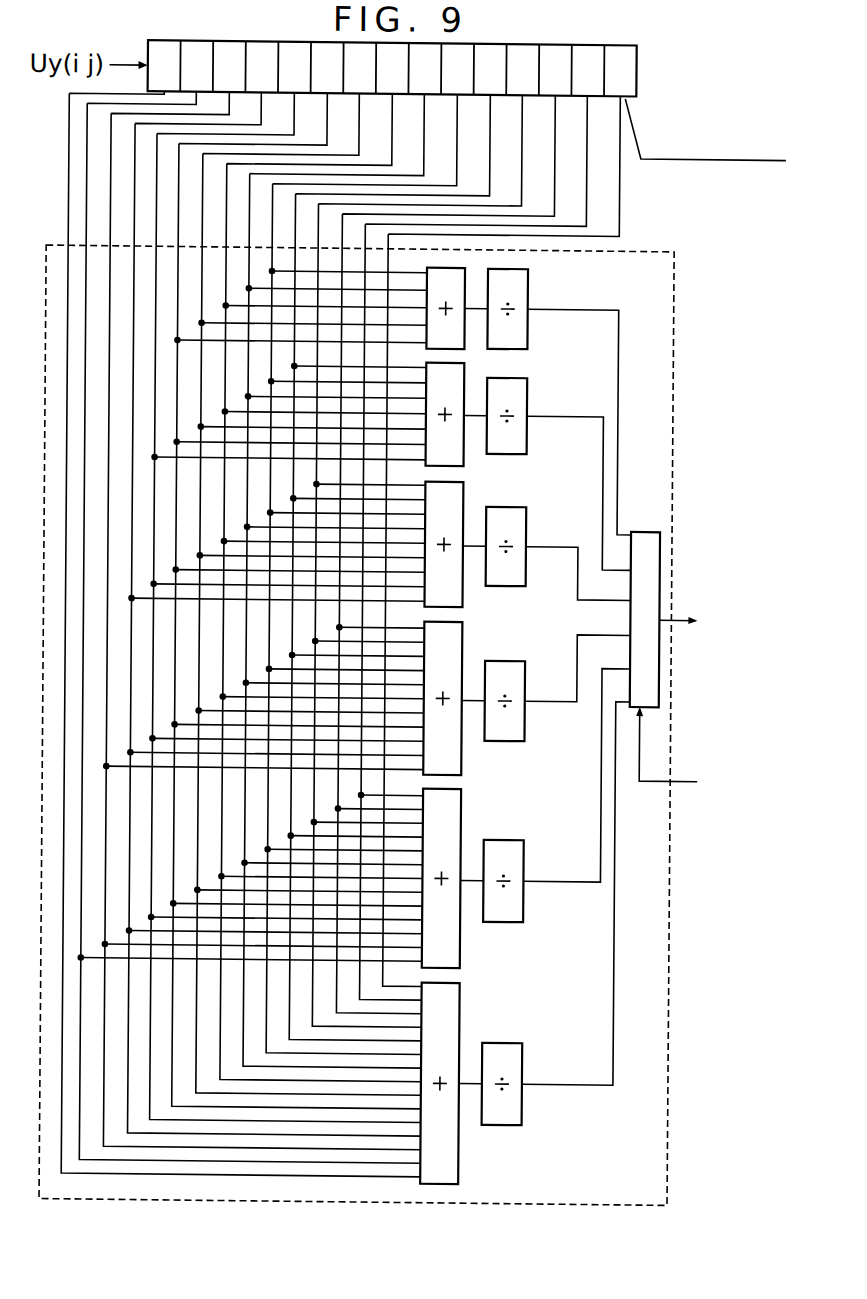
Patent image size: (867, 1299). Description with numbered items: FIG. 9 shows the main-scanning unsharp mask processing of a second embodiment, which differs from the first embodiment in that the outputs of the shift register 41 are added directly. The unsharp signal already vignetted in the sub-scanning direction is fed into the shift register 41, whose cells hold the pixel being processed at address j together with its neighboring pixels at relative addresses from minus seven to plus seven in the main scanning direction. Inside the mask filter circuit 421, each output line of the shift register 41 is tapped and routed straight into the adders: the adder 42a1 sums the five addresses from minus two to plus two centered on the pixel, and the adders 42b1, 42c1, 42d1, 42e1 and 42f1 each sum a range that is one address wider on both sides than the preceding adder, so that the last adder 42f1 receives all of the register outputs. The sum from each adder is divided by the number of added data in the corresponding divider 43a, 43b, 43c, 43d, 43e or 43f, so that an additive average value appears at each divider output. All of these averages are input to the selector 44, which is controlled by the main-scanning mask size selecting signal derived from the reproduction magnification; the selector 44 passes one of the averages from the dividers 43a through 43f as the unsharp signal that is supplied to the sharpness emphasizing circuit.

The shift register 41 is at (638, 57).
The mask filter circuit 421 is at (677, 921).
The adder 42a1 is at (467, 336).
The adder 42b1 is at (467, 446).
The adder 42c1 is at (467, 590).
The adder 42d1 is at (467, 752).
The adder 42e1 is at (467, 937).
The adder 42f1 is at (466, 1038).
The divider 43a is at (530, 326).
The divider 43b is at (530, 428).
The divider 43c is at (530, 566).
The divider 43d is at (530, 722).
The divider 43e is at (530, 903).
The divider 43f is at (542, 1035).
The selector 44 is at (645, 518).